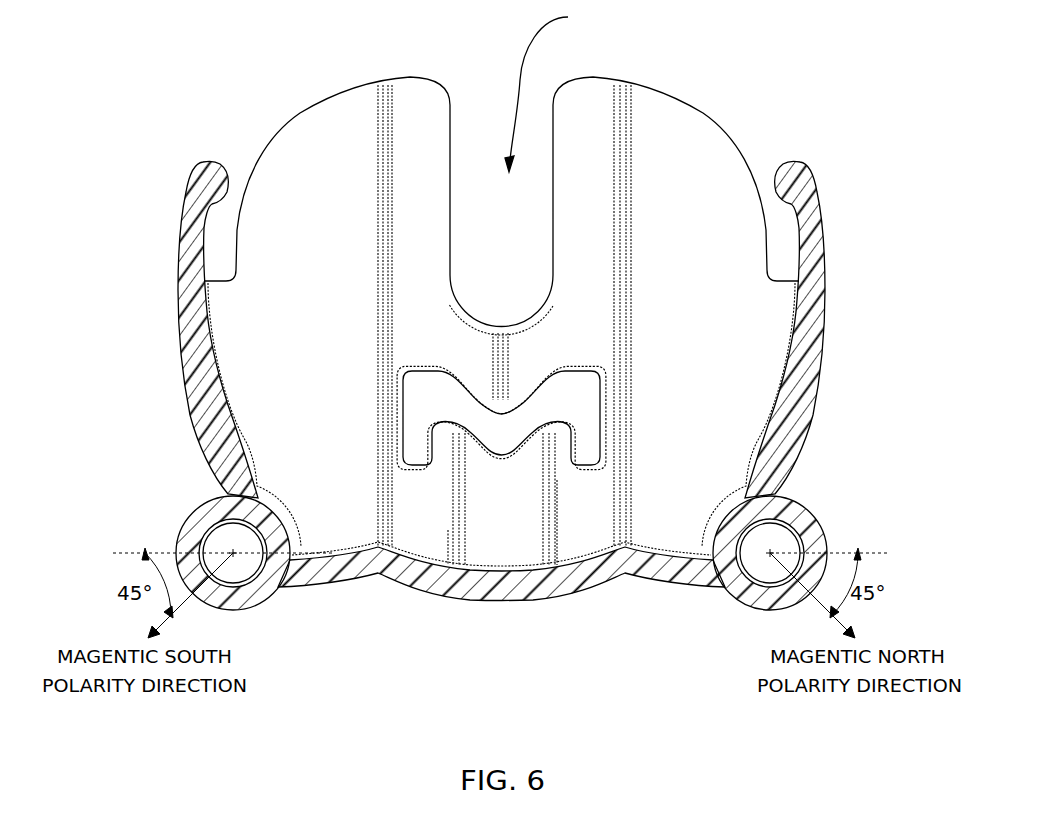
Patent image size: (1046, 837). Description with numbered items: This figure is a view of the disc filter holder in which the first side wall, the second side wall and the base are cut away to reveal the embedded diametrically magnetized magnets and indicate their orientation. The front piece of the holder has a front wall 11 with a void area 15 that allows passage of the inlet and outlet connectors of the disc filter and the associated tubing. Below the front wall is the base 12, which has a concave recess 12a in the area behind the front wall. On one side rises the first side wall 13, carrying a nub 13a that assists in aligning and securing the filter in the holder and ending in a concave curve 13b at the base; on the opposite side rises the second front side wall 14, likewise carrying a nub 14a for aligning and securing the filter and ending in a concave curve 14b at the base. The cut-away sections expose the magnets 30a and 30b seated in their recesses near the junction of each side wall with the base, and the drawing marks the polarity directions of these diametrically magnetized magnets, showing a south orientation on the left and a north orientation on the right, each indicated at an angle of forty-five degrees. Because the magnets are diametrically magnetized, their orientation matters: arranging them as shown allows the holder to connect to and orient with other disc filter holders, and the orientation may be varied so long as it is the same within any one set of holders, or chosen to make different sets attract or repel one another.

The front wall 11 is at (656, 137).
The base 12 is at (504, 580).
The concave recess 12a is at (511, 548).
The first side wall 13 is at (820, 223).
The nub 13a is at (775, 188).
The concave curve 13b is at (780, 462).
The second front side wall 14 is at (184, 223).
The nub 14a is at (229, 188).
The concave curve 14b is at (224, 462).
The void area 15 is at (551, 88).
The magnet 30a is at (226, 542).
The magnet 30b is at (778, 542).